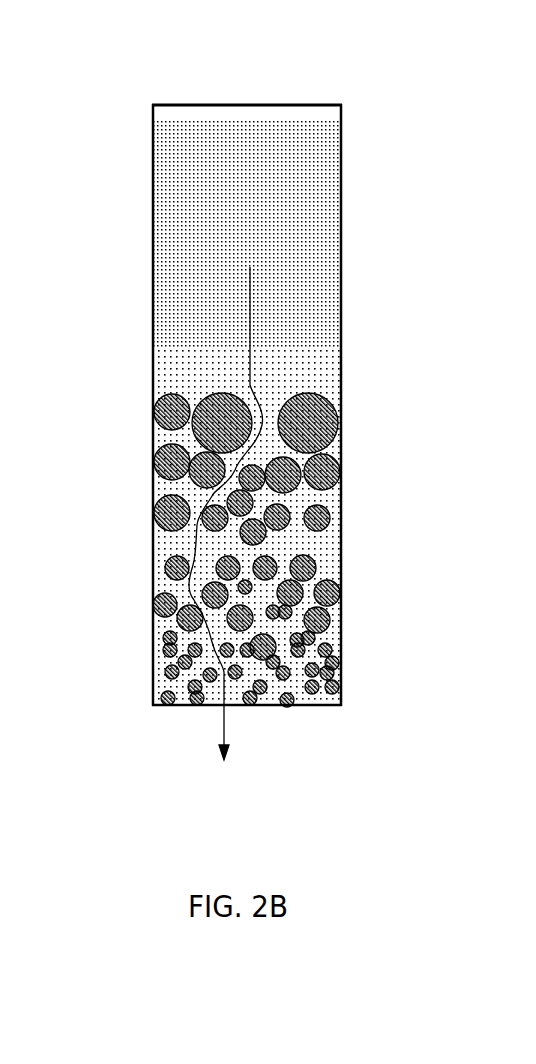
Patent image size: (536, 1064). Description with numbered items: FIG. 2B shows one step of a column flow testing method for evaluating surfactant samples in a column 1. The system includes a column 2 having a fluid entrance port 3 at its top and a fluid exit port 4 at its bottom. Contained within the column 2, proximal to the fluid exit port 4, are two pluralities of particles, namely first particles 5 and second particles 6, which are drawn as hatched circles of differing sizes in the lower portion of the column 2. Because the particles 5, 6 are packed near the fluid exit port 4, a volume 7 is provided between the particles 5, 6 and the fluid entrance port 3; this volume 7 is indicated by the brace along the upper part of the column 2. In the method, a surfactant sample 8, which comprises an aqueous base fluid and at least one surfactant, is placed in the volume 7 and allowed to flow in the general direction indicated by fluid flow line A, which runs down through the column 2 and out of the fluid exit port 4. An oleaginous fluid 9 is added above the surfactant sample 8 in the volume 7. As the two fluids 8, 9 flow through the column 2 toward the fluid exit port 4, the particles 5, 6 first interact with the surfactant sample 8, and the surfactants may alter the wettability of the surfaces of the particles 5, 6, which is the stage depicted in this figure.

The column 1 is at (245, 399).
The column 2 is at (341, 165).
The fluid entrance port 3 is at (287, 105).
The fluid exit port 4 is at (241, 707).
The first particles 5 is at (341, 615).
The second particles 6 is at (341, 450).
The volume 7 is at (356, 105).
The surfactant sample 8 is at (153, 543).
The oleaginous fluid 9 is at (160, 193).
The fluid flow line A is at (250, 283).